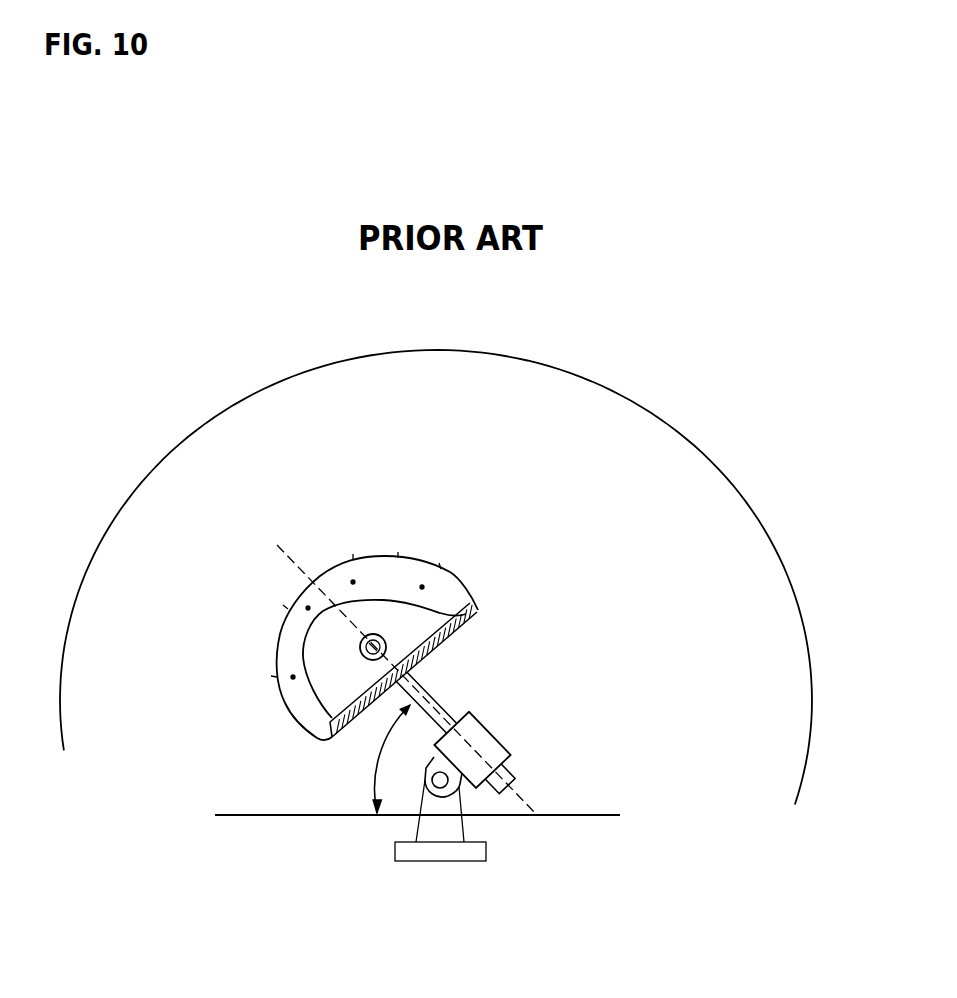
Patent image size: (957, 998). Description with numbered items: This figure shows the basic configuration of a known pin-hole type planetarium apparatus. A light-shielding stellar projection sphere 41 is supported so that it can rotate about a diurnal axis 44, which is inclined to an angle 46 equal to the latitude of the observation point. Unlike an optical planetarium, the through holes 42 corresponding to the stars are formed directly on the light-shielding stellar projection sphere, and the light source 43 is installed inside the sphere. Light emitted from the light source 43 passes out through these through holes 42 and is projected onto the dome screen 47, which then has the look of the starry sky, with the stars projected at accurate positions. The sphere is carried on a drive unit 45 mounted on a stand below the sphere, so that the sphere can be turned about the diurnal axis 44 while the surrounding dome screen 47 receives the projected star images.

The helmet shell 41 is at (377, 567).
The through holes 42 is at (422, 587).
The light source 43 is at (387, 643).
The diurnal axis 44 is at (295, 560).
The drive motor 45 is at (446, 774).
The angle 46 is at (380, 756).
The dome screen 47 is at (761, 503).